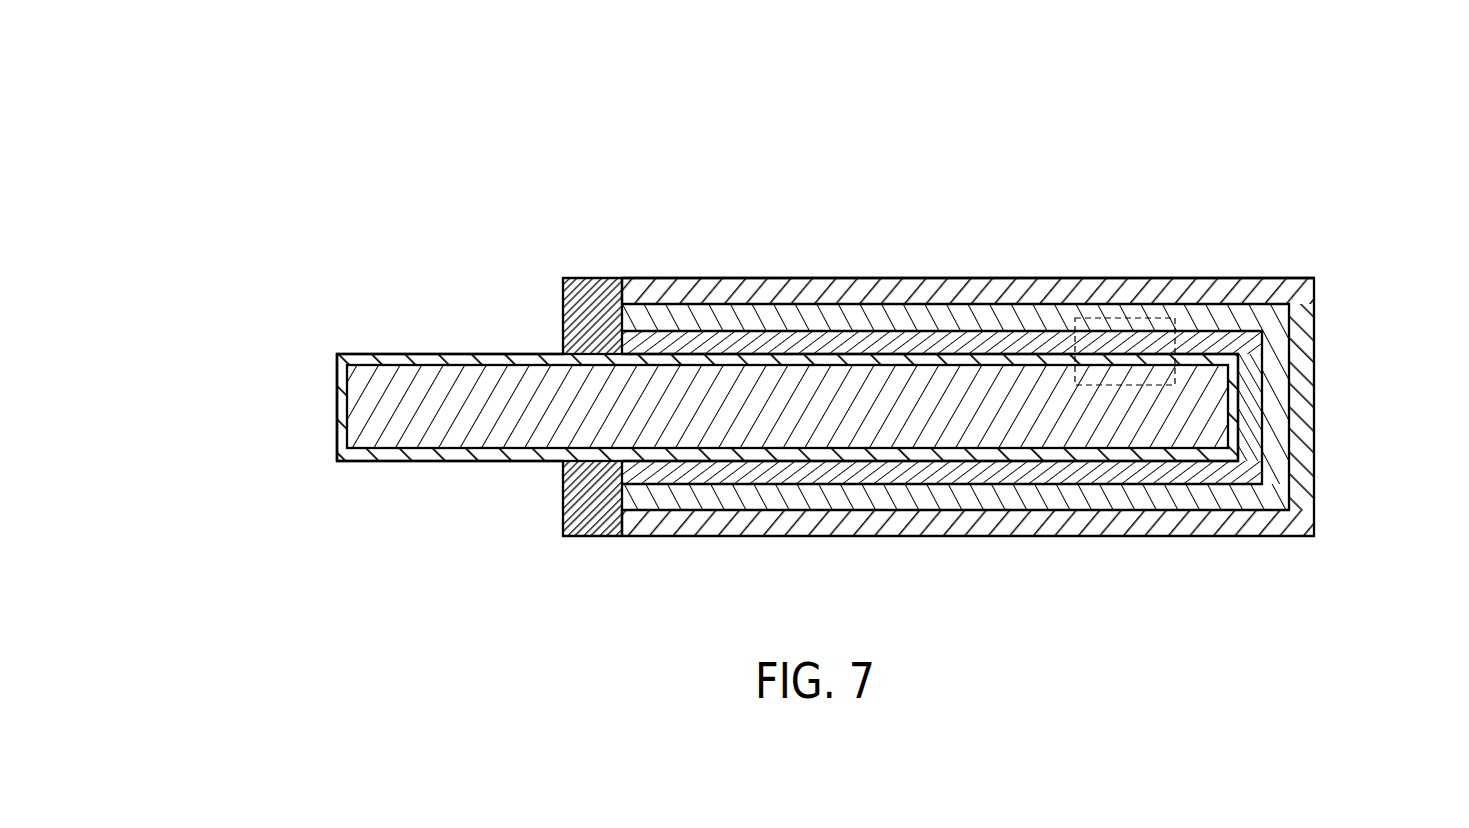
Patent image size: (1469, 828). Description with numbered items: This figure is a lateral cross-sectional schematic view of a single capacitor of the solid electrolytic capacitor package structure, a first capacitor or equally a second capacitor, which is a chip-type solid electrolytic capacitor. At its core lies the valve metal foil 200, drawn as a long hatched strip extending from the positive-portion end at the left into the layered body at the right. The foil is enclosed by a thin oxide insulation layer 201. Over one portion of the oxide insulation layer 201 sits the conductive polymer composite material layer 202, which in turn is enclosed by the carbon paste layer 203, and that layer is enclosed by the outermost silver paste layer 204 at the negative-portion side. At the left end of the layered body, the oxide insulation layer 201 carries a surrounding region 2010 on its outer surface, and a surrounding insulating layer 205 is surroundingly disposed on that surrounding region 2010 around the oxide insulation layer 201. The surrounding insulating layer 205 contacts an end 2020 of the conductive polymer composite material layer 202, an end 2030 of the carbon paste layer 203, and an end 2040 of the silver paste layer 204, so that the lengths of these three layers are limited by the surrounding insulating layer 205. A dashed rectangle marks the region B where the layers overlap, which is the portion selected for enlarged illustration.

The valve metal foil 200 is at (1138, 437).
The oxide insulation layer 201 is at (1240, 452).
The conductive polymer composite material layer 202 is at (1250, 385).
The carbon paste layer 203 is at (1267, 317).
The silver paste layer 204 is at (1217, 297).
The surrounding insulating layer 205 is at (600, 512).
The surrounding region 2010 is at (582, 483).
The end of the conductive polymer composite material layer 2020 is at (610, 345).
The end of the carbon paste layer 2030 is at (615, 318).
The end of the silver paste layer 2040 is at (615, 295).
The enlarged region B is at (1112, 277).